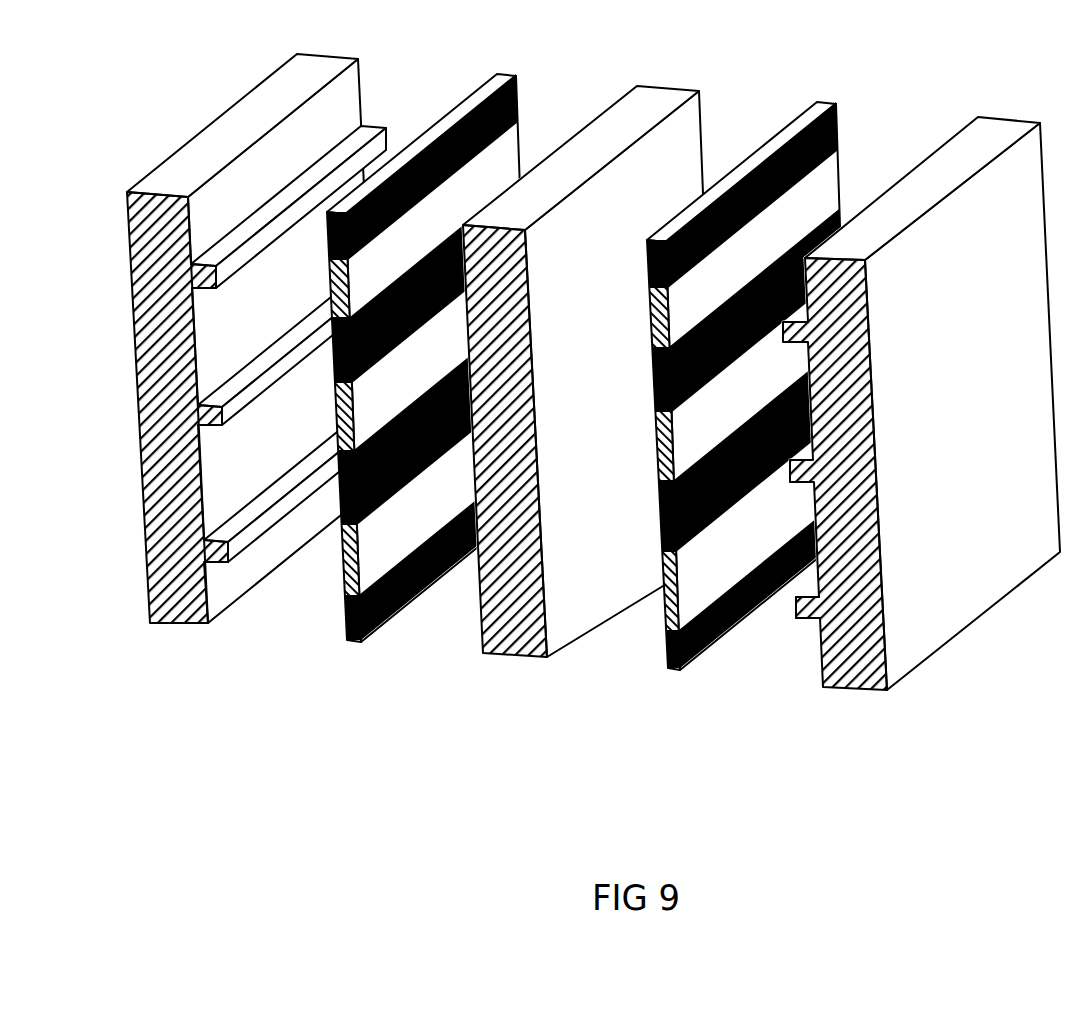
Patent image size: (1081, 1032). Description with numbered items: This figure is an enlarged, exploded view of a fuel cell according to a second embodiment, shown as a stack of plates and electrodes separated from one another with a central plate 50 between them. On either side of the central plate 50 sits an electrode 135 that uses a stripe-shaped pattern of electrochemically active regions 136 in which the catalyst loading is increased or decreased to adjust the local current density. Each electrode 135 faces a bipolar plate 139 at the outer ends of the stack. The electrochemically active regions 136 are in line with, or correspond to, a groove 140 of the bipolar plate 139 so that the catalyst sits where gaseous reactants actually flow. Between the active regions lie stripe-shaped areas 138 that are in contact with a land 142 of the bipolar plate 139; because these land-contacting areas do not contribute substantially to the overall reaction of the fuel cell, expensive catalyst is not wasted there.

The bipolar separator plate 50 is at (512, 655).
The electrode 135 is at (356, 646).
The electrochemically active regions 136 is at (837, 130).
The stripe-shaped areas 138 is at (508, 160).
The bipolar plate 139 is at (170, 624).
The groove 140 is at (205, 500).
The land 142 is at (800, 603).